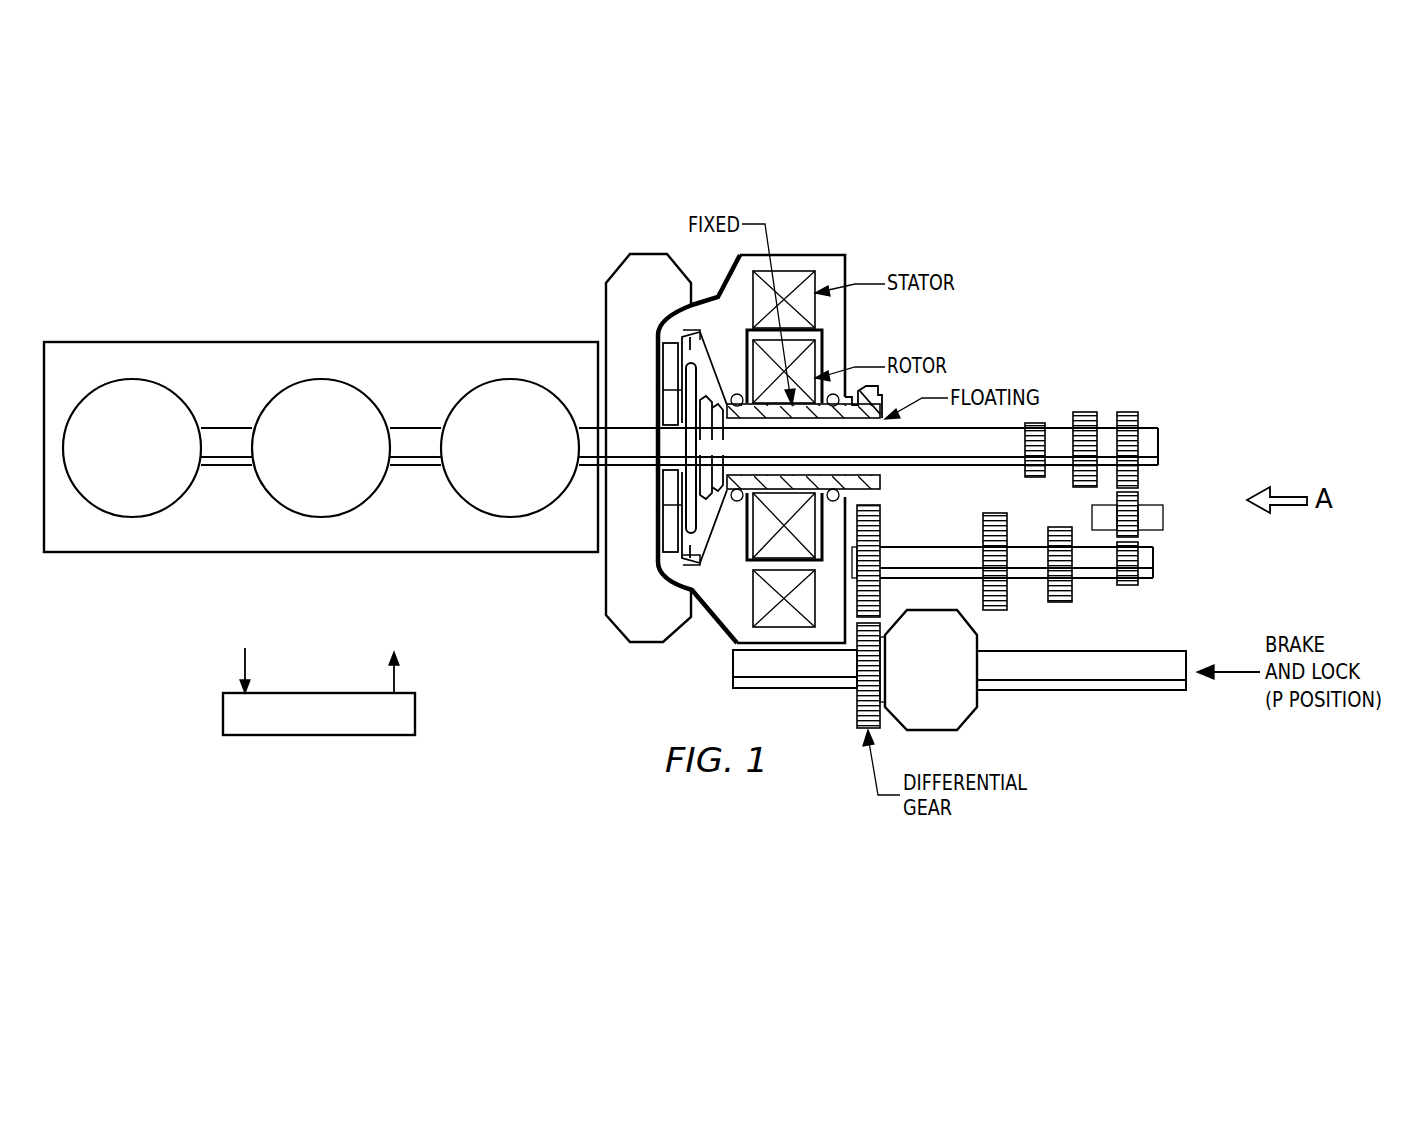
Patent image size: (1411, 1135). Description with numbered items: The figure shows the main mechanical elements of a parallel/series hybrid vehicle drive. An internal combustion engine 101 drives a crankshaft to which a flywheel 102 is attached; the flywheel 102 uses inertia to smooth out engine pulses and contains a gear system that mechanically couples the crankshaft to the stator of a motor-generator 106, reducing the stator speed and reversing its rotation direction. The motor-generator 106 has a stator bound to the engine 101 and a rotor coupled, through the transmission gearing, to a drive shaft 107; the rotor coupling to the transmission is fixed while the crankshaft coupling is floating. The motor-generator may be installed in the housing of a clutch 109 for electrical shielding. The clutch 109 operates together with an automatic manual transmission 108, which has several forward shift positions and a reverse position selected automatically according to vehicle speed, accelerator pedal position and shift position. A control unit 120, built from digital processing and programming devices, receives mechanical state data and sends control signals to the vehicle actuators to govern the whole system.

The internal combustion engine 101 is at (318, 342).
The flywheel 102 is at (652, 254).
The motor-generator 106 is at (816, 250).
The drive shaft 107 is at (1090, 690).
The automatic manual transmission 108 is at (1041, 568).
The clutch 109 is at (712, 506).
The control unit 120 is at (223, 714).